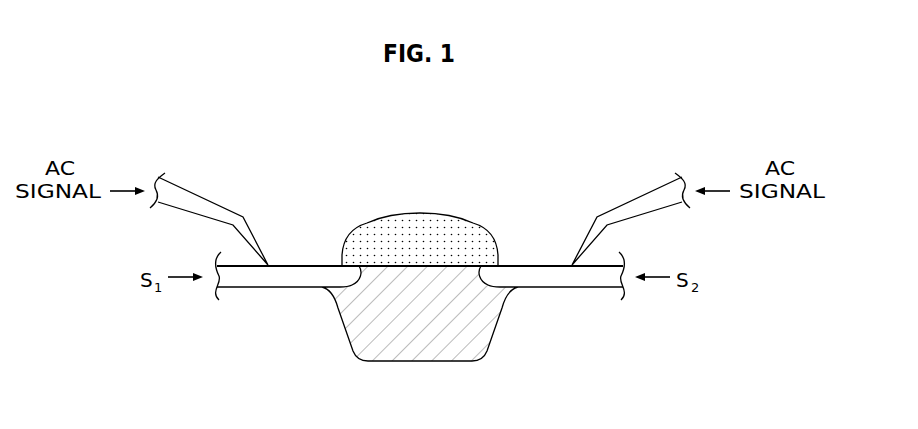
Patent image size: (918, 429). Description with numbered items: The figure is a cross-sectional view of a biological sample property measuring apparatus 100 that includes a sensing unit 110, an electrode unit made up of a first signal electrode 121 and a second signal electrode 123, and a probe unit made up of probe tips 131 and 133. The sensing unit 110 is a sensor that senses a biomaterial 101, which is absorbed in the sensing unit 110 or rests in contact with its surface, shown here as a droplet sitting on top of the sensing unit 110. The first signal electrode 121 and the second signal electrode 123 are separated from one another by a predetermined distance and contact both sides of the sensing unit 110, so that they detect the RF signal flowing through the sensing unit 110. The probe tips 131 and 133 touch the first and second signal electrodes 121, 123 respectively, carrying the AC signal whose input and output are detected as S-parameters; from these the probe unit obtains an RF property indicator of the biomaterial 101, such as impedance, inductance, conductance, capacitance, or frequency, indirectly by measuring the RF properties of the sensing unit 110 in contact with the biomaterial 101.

The biological sample property measuring apparatus 100 is at (443, 118).
The biomaterial 101 is at (418, 213).
The sensing unit 110 is at (420, 352).
The first signal electrode 121 is at (258, 277).
The second signal electrode 123 is at (583, 277).
The probe tip 131 is at (188, 200).
The probe tip 133 is at (652, 200).